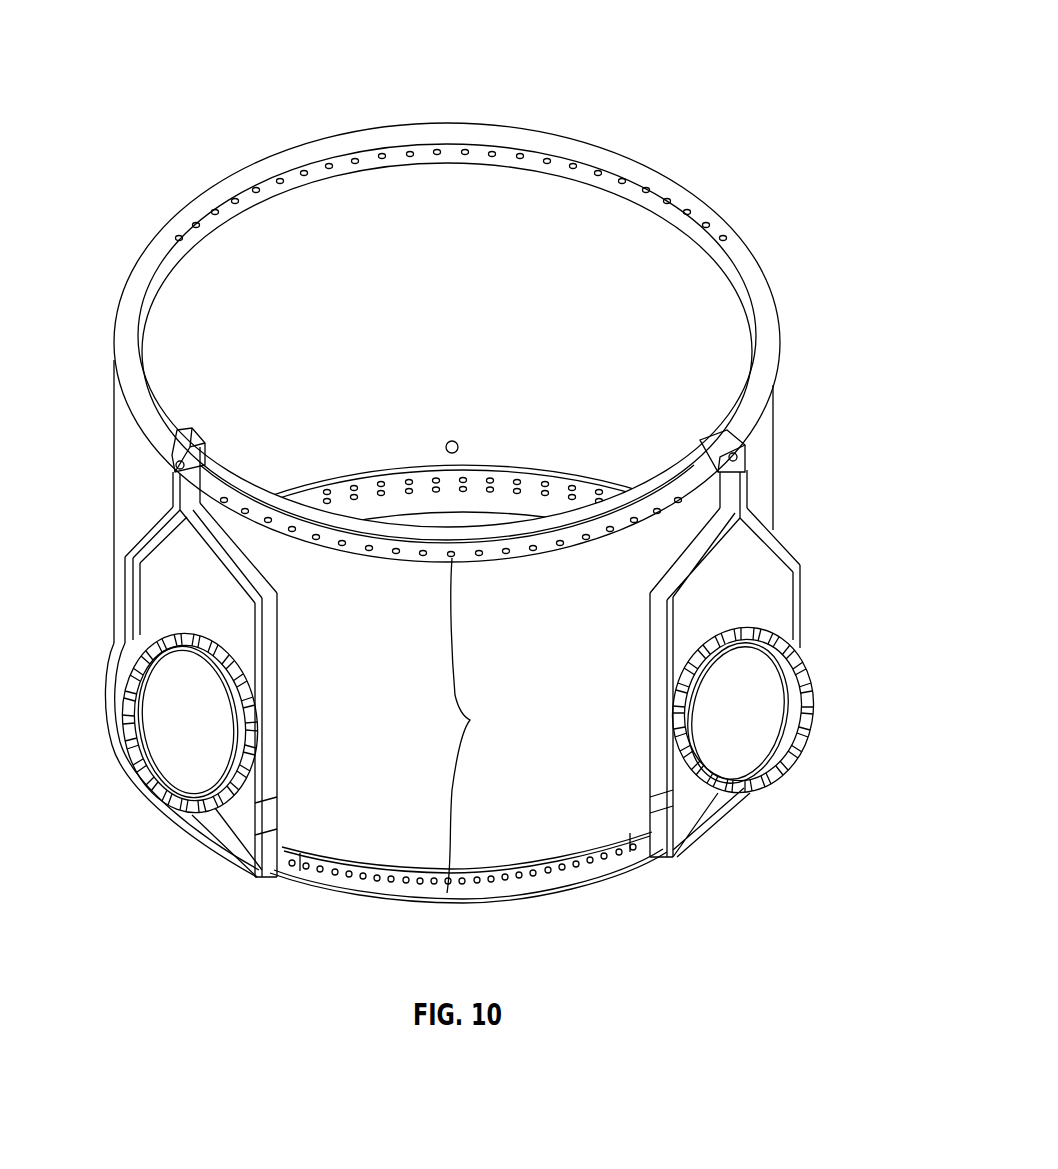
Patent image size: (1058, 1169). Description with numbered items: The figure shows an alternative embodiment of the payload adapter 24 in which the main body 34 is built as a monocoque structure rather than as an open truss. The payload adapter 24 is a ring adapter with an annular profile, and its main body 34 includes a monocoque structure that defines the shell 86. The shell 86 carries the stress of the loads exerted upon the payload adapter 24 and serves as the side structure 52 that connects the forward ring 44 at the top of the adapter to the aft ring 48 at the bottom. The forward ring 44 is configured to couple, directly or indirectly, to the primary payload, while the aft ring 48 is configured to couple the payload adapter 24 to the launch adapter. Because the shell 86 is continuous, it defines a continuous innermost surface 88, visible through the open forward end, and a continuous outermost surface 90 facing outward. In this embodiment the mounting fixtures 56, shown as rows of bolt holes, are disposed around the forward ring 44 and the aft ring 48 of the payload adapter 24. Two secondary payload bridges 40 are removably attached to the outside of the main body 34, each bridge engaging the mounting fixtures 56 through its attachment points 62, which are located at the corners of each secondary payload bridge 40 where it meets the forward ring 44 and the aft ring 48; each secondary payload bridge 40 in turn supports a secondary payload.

The payload adapter 24 is at (708, 34).
The main body 34 is at (641, 243).
The secondary payload bridge 40 is at (786, 542).
The forward ring 44 is at (438, 122).
The aft ring 48 is at (560, 902).
The side structure 52 is at (470, 720).
The mounting fixtures 56 is at (503, 557).
The attachment points 62 is at (154, 466).
The shell 86 is at (332, 816).
The innermost surface 88 is at (441, 339).
The outermost surface 90 is at (441, 704).